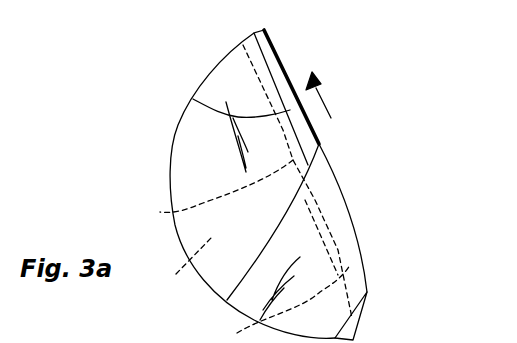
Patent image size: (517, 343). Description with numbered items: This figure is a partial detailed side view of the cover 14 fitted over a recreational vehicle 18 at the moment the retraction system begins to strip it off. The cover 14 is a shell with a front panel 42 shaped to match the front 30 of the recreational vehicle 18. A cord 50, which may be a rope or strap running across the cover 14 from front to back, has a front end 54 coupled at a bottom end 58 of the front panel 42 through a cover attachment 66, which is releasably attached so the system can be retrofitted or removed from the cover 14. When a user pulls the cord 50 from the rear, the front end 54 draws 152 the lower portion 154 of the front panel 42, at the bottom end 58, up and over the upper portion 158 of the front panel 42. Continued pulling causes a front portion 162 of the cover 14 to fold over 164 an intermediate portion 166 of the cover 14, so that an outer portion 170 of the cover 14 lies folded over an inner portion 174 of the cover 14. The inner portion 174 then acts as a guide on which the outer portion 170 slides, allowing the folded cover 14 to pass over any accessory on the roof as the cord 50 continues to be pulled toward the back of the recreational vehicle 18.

The cover 14 is at (183, 160).
The recreational vehicle 18 is at (186, 265).
The front 30 is at (212, 189).
The front panel 42 is at (276, 56).
The cord 50 is at (282, 60).
The front end 54 is at (290, 78).
The bottom end 58 is at (320, 145).
The cover attachment 66 is at (320, 143).
The draw 152 is at (326, 97).
The lower portion 154 is at (353, 222).
The upper portion 158 is at (193, 99).
The front portion 162 is at (363, 250).
The fold over 164 is at (367, 292).
The intermediate portion 166 is at (257, 78).
The outer portion 170 is at (341, 190).
The inner portion 174 is at (277, 299).